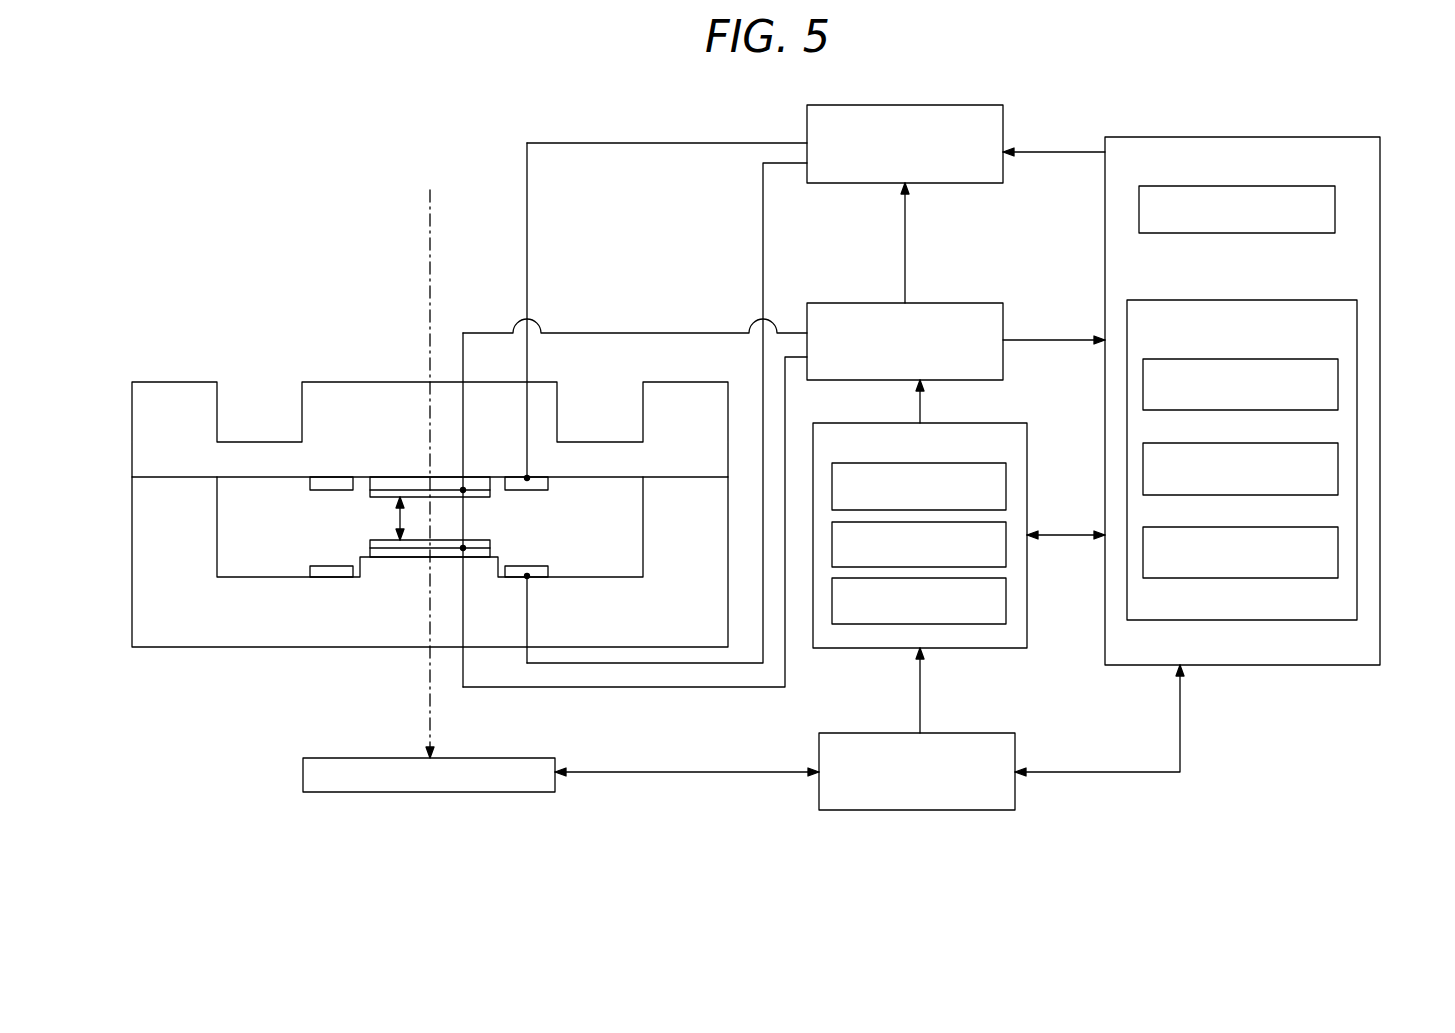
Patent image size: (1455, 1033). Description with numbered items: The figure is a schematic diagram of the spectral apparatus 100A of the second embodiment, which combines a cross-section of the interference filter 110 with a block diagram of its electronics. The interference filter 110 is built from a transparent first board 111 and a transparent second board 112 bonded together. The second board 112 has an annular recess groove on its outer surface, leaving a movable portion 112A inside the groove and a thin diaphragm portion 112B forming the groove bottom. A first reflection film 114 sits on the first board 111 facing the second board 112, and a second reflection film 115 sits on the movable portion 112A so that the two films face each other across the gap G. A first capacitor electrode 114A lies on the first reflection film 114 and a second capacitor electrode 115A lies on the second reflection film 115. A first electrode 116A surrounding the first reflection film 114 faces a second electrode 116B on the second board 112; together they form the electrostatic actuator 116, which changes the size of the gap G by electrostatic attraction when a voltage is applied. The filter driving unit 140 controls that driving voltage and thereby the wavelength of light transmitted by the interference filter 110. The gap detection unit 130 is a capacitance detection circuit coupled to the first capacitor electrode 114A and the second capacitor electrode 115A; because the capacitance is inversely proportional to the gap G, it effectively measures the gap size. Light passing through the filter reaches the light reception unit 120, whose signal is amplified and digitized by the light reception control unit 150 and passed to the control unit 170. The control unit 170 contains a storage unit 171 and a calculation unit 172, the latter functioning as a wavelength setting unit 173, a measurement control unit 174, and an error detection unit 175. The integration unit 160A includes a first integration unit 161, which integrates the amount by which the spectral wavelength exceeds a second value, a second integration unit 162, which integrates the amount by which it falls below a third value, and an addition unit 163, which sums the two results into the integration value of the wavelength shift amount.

The spectral apparatus 100A is at (258, 172).
The interference filter 110 is at (146, 362).
The first board 111 is at (152, 645).
The second board 112 is at (178, 382).
The movable portion 112A is at (316, 410).
The diaphragm portion 112B is at (256, 440).
The first reflection film 114 is at (372, 560).
The first capacitor electrode 114A is at (368, 540).
The second reflection film 115 is at (376, 480).
The second capacitor electrode 115A is at (365, 490).
The electrostatic actuator 116 is at (557, 455).
The first electrode 116A is at (570, 548).
The second electrode 116B is at (548, 482).
The gap G is at (391, 518).
The light reception unit 120 is at (313, 775).
The gap detection unit 130 is at (818, 303).
The filter driving unit 140 is at (807, 105).
The light reception control unit 150 is at (845, 812).
The integration unit 160A is at (1012, 650).
The first integration unit 161 is at (1006, 483).
The second integration unit 162 is at (1006, 538).
The addition unit 163 is at (1006, 597).
The control unit 170 is at (1135, 137).
The storage unit 171 is at (1335, 206).
The calculation unit 172 is at (1357, 302).
The wavelength setting unit 173 is at (1338, 378).
The measurement control unit 174 is at (1338, 462).
The error detection unit 175 is at (1338, 548).